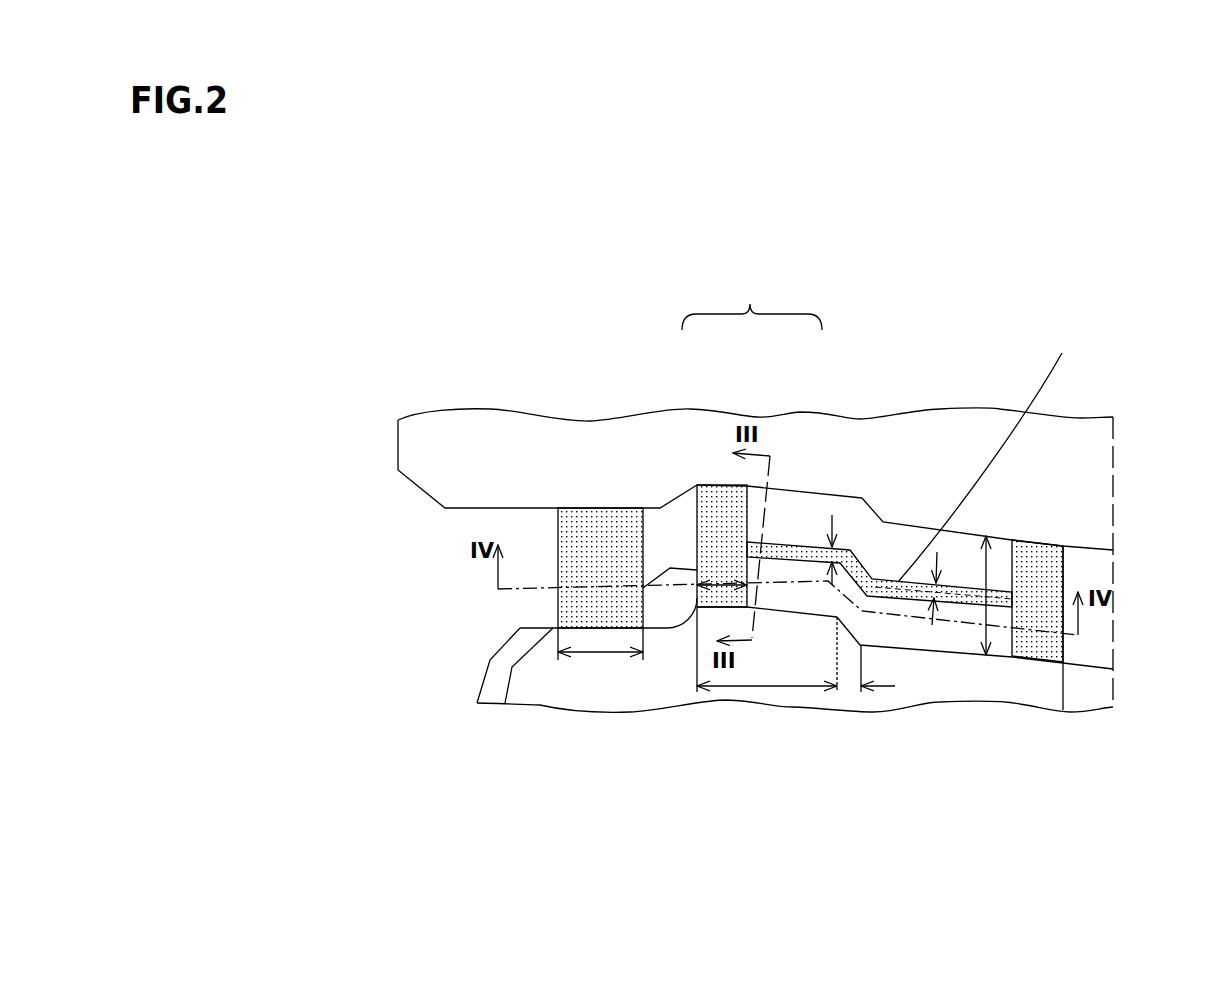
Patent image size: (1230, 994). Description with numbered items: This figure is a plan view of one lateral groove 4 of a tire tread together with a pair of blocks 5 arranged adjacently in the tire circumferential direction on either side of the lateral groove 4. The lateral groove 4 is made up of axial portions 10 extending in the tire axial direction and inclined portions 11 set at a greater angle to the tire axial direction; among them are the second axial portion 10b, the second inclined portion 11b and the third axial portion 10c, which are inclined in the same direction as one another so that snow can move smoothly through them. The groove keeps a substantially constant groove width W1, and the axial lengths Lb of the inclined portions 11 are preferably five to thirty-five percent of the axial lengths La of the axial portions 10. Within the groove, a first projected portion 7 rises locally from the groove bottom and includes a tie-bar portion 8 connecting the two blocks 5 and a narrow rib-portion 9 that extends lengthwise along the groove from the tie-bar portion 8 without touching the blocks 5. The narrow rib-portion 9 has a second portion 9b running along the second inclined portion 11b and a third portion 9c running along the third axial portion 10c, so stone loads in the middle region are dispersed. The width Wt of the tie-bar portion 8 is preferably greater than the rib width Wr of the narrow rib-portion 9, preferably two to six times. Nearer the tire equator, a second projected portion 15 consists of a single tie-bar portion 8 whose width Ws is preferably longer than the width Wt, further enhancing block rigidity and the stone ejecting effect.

The lateral groove 4 is at (1092, 654).
The block 5 is at (1070, 447).
The first projected portion 7 is at (752, 304).
The tie-bar portion 8 is at (722, 507).
The narrow rib-portion 9 is at (802, 548).
The second portion 9b is at (863, 575).
The third portion 9c is at (953, 582).
The axial portion 10 is at (532, 527).
The second axial portion 10b is at (822, 522).
The third axial portion 10c is at (940, 636).
The inclined portion 11 is at (668, 525).
The second inclined portion 11b is at (867, 530).
The second projected portion 15 is at (600, 527).
The groove width W1 is at (987, 569).
The width of second projected portion Ws is at (600, 652).
The width of tie-bar portion Wt is at (697, 600).
The axial length of axial portion La is at (767, 687).
The axial length of inclined portion Lb is at (847, 687).
The rib width Wr is at (833, 575).